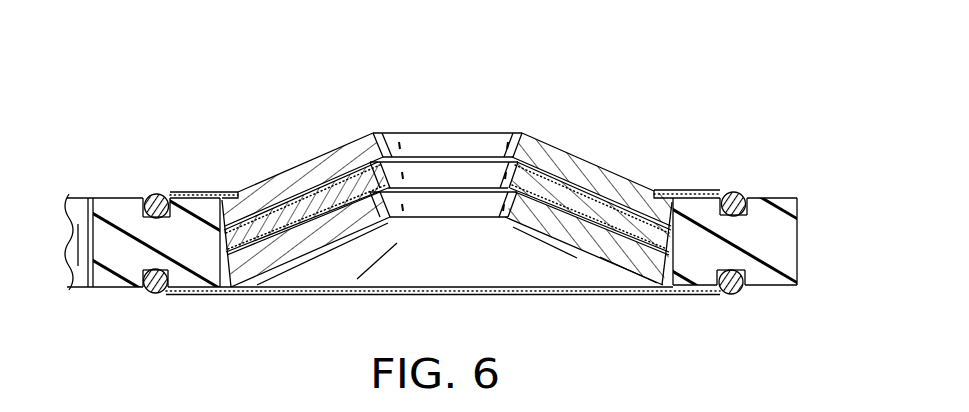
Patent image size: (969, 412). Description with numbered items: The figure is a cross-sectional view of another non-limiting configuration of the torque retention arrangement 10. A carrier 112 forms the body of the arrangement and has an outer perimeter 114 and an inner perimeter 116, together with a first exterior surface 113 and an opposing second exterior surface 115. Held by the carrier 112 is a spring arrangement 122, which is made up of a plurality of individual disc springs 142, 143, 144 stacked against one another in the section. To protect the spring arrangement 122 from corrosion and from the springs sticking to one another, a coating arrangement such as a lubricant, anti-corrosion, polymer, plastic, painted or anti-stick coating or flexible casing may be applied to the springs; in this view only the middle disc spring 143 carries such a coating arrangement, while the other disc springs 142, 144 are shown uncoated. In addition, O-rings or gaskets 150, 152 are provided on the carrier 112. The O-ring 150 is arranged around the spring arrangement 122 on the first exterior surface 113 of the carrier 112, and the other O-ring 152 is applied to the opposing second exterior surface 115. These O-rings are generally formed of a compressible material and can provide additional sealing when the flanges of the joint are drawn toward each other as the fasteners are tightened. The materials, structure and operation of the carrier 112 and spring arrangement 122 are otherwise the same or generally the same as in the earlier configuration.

The torque retention arrangement 10 is at (646, 91).
The carrier 112 is at (697, 210).
The first exterior surface 113 is at (774, 197).
The outer perimeter 114 is at (798, 228).
The second exterior surface 115 is at (775, 293).
The inner perimeter 116 is at (79, 197).
The spring arrangement 122 is at (582, 156).
The disc spring 142 is at (334, 158).
The disc spring 143 is at (620, 225).
The disc spring 144 is at (328, 233).
The O-ring 150 is at (158, 193).
The O-ring 152 is at (151, 293).